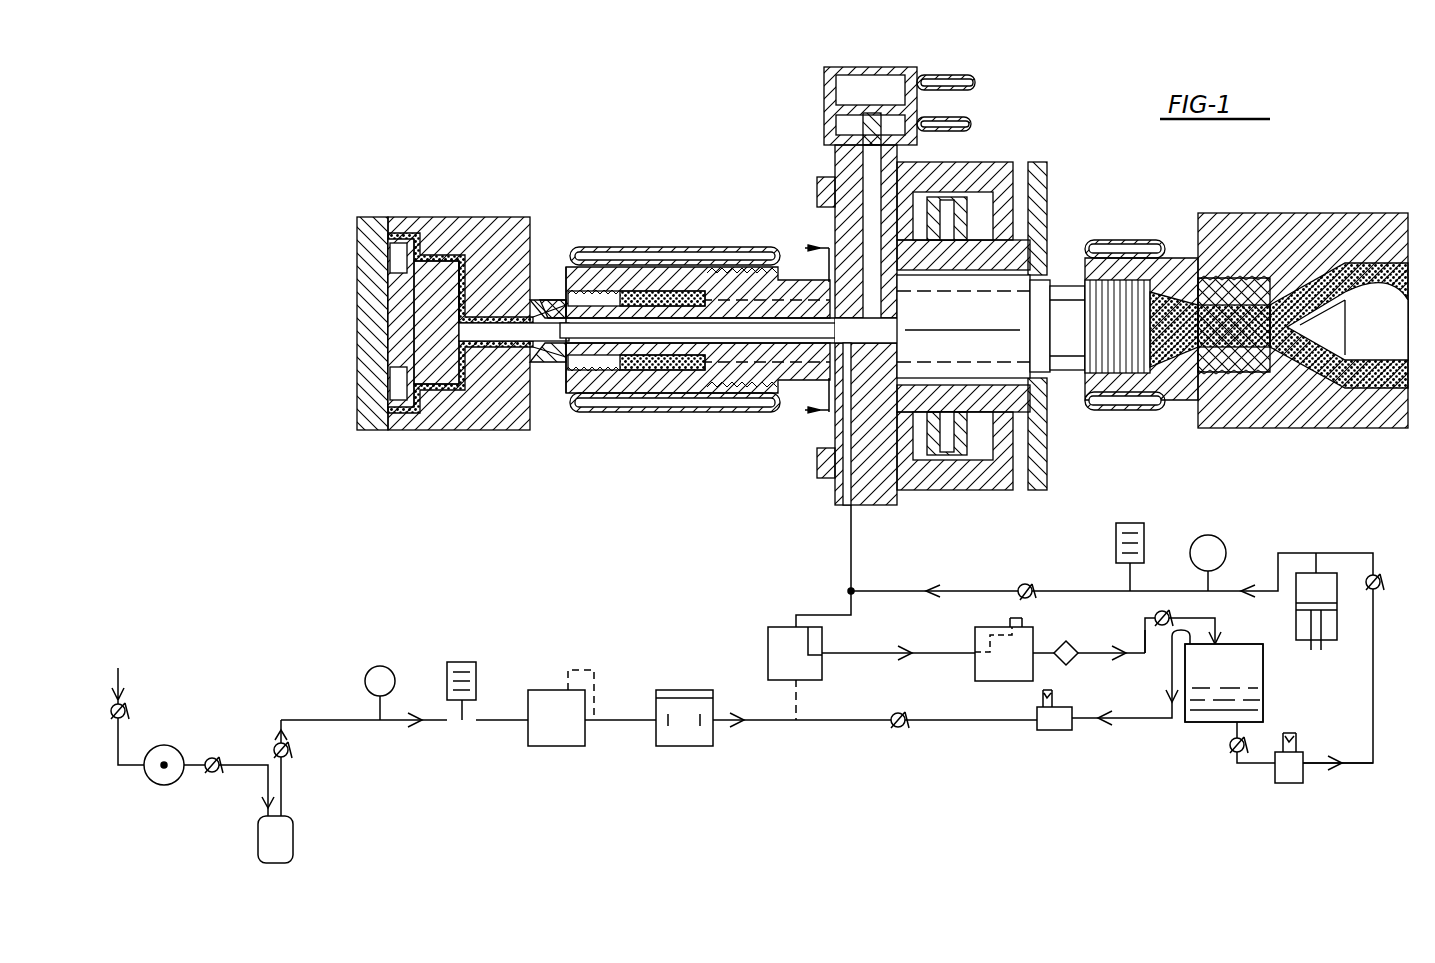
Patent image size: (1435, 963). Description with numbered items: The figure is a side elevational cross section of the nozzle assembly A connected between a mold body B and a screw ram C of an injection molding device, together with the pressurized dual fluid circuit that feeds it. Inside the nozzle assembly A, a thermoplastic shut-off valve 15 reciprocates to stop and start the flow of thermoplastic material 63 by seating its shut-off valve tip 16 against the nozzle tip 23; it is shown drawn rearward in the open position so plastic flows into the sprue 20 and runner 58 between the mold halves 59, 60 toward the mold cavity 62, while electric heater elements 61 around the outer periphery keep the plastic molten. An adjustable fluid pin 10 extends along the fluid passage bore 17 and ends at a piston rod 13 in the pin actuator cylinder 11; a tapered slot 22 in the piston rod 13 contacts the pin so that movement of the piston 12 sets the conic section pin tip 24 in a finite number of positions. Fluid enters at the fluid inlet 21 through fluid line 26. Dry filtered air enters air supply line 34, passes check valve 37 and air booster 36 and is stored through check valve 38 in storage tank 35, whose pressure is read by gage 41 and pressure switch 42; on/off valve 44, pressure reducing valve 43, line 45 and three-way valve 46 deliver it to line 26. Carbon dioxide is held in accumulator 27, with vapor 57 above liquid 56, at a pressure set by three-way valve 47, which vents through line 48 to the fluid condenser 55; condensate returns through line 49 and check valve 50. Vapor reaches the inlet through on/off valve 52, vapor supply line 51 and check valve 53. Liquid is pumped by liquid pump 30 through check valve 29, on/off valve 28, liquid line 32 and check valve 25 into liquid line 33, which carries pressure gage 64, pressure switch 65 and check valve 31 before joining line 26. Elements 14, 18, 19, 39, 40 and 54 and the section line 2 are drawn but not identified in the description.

The fluid pin 10 is at (558, 388).
The pin actuator cylinder 11 is at (824, 98).
The piston 12 is at (895, 70).
The piston rod 13 is at (862, 180).
The needle 14 is at (680, 343).
The shut-off valve 15 is at (650, 370).
The shut-off valve tip 16 is at (552, 300).
The fluid passage bore 17 is at (700, 275).
The cylinder block 18 is at (988, 165).
The rear plate 19 is at (1047, 200).
The sprue 20 is at (500, 345).
The fluid inlet 21 is at (845, 508).
The tapered slot 22 is at (900, 300).
The nozzle tip 23 is at (540, 347).
The conic section pin tip 24 is at (525, 300).
The check valve 25 is at (1380, 586).
The fluid line 26 is at (851, 555).
The accumulator 27 is at (1265, 662).
The on/off valve 28 is at (1295, 785).
The check valve 29 is at (1235, 755).
The liquid pump 30 is at (1316, 572).
The check valve 31 is at (1030, 585).
The liquid line 32 is at (1375, 738).
The liquid line 33 is at (972, 592).
The air supply line 34 is at (124, 690).
The storage tank 35 is at (258, 840).
The air booster 36 is at (150, 782).
The check valve 37 is at (128, 706).
The check valve 38 is at (208, 775).
The valve 39 is at (292, 760).
The line 40 is at (285, 790).
The gage 41 is at (366, 684).
The pressure switch 42 is at (476, 668).
The pressure reducing valve 43 is at (558, 690).
The on/off valve 44 is at (680, 746).
The line 45 is at (762, 722).
The three-way valve 46 is at (768, 655).
The three-way valve 47 is at (975, 668).
The line 48 is at (856, 654).
The line 49 is at (1100, 660).
The check valve 50 is at (1155, 614).
The vapor supply line 51 is at (1170, 688).
The on/off valve 52 is at (1068, 732).
The check valve 53 is at (905, 726).
The line 54 is at (355, 722).
The fluid condenser 55 is at (1090, 630).
The liquid carbon dioxide 56 is at (1265, 705).
The carbon dioxide vapor 57 is at (1240, 650).
The runner 58 is at (440, 385).
The mold half 59 is at (360, 236).
The mold half 60 is at (430, 217).
The electric heater elements 61 is at (650, 247).
The mold cavity 62 is at (400, 430).
The thermoplastic material 63 is at (462, 270).
The pressure gage 64 is at (1226, 546).
The pressure switch 65 is at (1144, 540).
The section line 2 is at (813, 330).
The nozzle assembly A is at (622, 245).
The mold body B is at (400, 215).
The screw ram C is at (1290, 215).